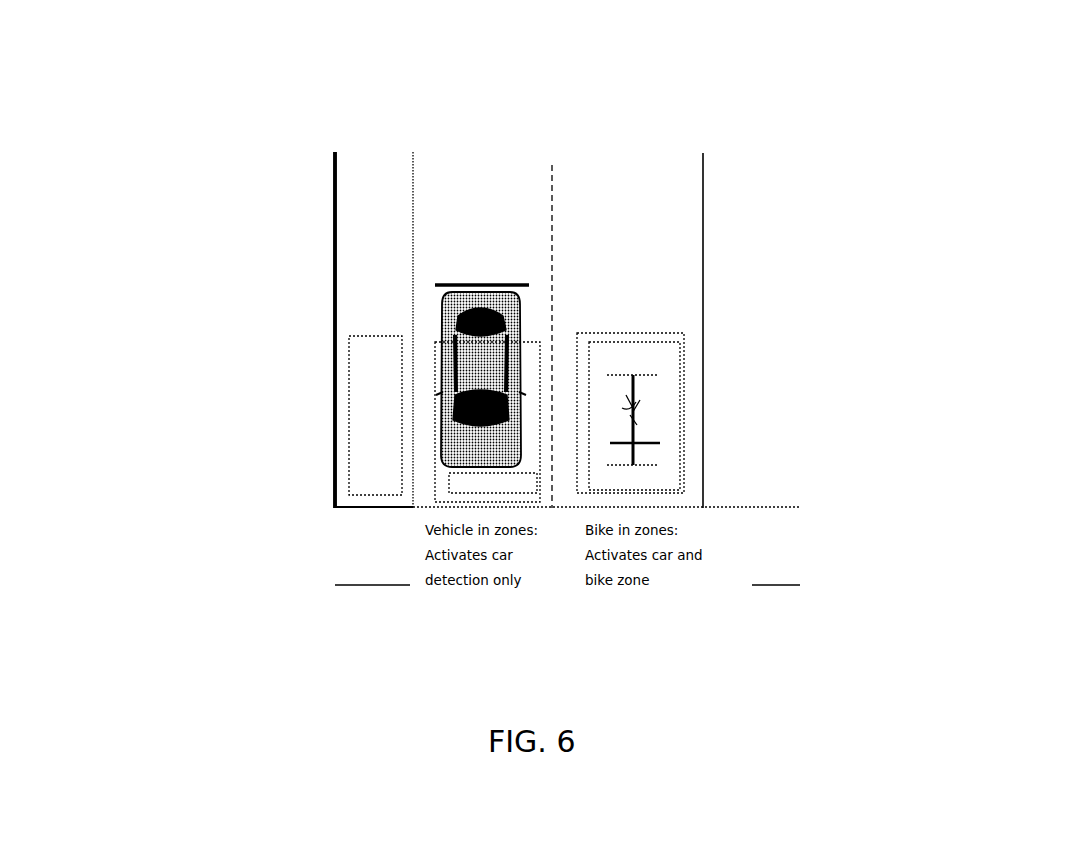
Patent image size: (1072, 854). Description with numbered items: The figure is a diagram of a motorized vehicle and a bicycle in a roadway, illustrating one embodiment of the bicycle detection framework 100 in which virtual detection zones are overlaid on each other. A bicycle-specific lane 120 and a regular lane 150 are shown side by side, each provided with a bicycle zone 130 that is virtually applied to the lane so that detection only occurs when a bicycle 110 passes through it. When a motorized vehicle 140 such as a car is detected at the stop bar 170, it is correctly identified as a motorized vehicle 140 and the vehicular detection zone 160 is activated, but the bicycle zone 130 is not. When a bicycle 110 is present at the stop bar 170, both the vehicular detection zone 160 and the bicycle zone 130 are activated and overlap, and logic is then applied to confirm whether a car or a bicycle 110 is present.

The bicycle detection framework 100 is at (484, 187).
The bicycle 110 is at (650, 445).
The bicycle-specific lane 120 is at (368, 233).
The bicycle zone 130 is at (347, 358).
The motorized vehicle 140 is at (430, 420).
The regular lane 150 is at (645, 270).
The vehicular detection zone 160 is at (686, 383).
The stop bar 170 is at (295, 583).